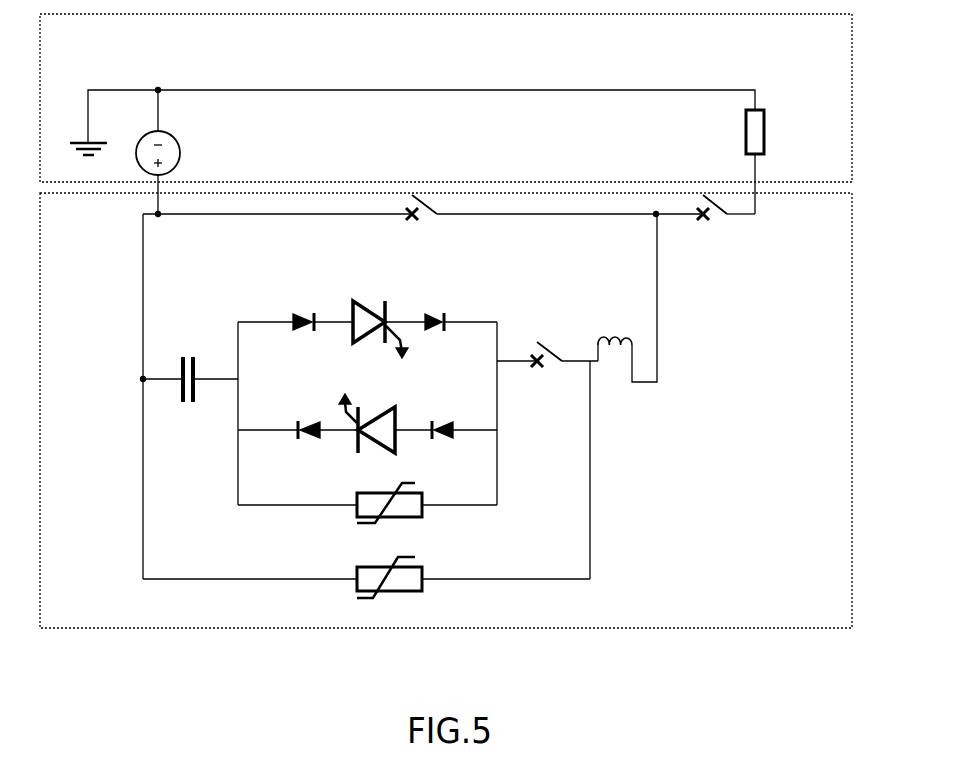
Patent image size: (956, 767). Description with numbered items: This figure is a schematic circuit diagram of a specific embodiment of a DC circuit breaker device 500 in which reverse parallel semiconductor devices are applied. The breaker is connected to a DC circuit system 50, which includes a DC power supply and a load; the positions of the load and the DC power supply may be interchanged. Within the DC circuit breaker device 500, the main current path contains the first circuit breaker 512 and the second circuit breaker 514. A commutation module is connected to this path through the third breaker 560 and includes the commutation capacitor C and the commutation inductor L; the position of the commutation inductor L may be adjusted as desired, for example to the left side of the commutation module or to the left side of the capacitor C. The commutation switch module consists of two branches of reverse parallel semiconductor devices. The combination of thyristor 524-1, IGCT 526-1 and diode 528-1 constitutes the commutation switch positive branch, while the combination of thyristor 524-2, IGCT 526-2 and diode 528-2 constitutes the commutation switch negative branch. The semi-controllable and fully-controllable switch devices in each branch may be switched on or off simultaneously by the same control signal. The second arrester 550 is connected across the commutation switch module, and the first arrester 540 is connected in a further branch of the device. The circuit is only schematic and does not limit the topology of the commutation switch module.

The DC circuit system 50 is at (248, 48).
The DC circuit breaker device 500 is at (268, 618).
The first circuit breaker 512 is at (422, 226).
The second circuit breaker 514 is at (713, 226).
The thyristor 524-1 is at (300, 302).
The IGCT 526-1 is at (380, 316).
The diode 528-1 is at (440, 302).
The thyristor 524-2 is at (301, 451).
The IGCT 526-2 is at (373, 432).
The diode 528-2 is at (451, 446).
The second arrester 550 is at (389, 516).
The first arrester 540 is at (389, 591).
The third breaker 560 is at (547, 373).
The commutation capacitor C is at (190, 399).
The commutation inductor L is at (627, 298).